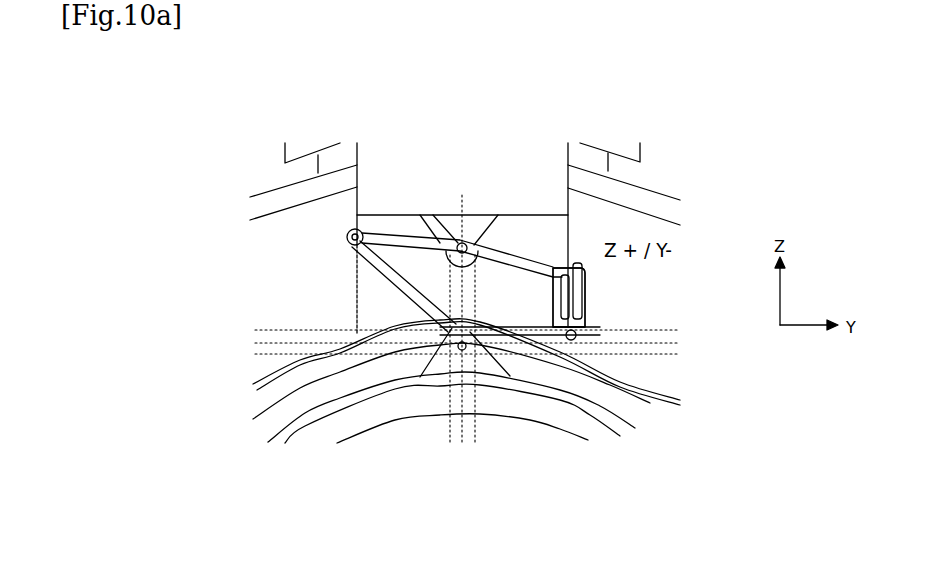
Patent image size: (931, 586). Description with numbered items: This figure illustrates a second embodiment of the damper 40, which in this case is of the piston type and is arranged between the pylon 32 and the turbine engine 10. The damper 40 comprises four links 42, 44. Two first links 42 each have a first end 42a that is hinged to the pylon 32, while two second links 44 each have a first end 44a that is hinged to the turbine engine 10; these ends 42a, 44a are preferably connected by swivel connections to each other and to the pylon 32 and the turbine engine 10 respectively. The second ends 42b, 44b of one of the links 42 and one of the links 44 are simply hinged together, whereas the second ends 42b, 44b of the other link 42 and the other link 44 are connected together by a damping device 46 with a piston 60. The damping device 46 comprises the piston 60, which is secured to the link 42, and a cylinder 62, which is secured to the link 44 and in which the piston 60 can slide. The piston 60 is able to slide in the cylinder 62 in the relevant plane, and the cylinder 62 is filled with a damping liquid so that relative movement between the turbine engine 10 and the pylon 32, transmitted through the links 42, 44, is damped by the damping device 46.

The turbine engine 10 is at (604, 437).
The pylon 32 is at (463, 146).
The damper 40 is at (292, 298).
The first link 42 is at (420, 215).
The first end of first link 42a is at (468, 242).
The second end of first link 42b is at (575, 262).
The second link 44 is at (397, 288).
The first end of second link 44a is at (445, 316).
The second end of second link 44b is at (605, 334).
The damping device 46 is at (589, 305).
The piston 60 is at (556, 298).
The cylinder 62 is at (550, 303).